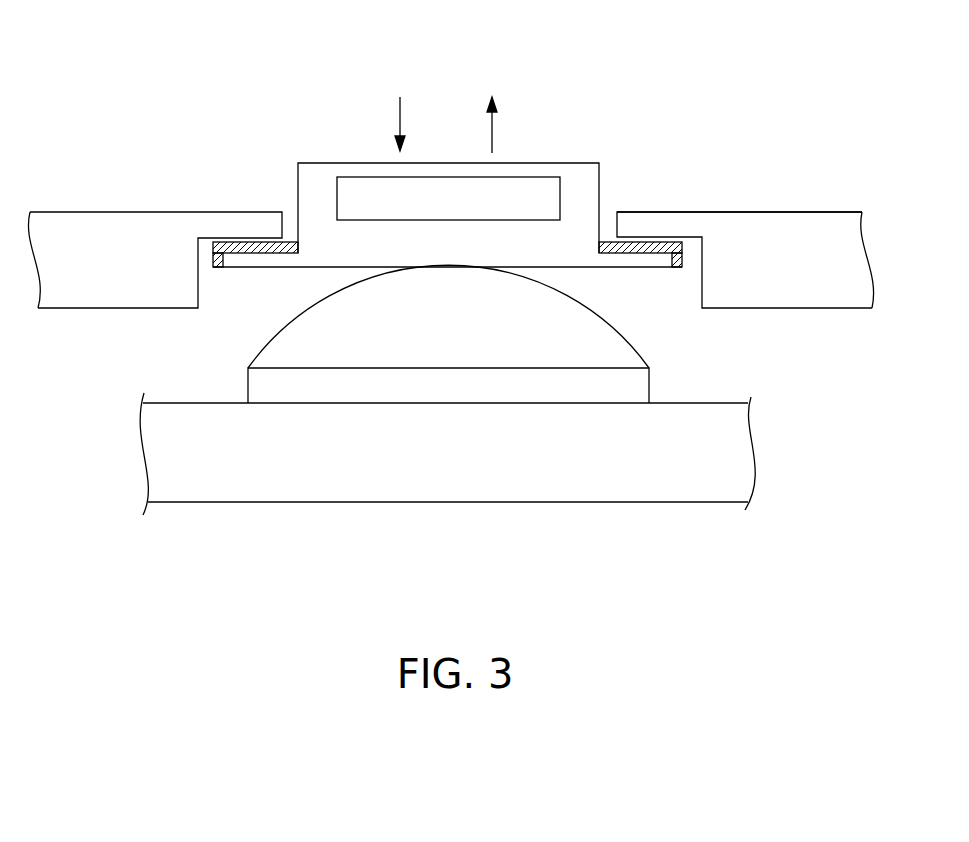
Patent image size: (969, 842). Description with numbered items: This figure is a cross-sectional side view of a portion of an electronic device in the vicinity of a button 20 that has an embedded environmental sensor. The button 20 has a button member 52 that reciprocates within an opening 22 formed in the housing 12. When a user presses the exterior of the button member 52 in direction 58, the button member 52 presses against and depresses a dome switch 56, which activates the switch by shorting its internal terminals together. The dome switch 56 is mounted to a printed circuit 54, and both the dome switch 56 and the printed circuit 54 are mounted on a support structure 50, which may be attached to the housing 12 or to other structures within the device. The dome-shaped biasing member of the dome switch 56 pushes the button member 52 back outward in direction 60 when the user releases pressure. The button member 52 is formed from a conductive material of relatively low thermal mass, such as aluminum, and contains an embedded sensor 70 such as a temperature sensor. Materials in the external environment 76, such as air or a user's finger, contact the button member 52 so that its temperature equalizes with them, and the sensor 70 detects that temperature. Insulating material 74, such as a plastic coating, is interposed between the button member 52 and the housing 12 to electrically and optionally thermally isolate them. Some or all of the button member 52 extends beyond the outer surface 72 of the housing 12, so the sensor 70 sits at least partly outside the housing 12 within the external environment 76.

The housing 12 is at (100, 230).
The button 20 is at (530, 51).
The opening 22 is at (287, 191).
The support structure 50 is at (375, 483).
The button member 52 is at (318, 163).
The printed circuit 54 is at (543, 392).
The dome switch 56 is at (598, 332).
The direction 58 is at (402, 125).
The direction 60 is at (493, 127).
The sensor 70 is at (538, 185).
The outer surface 72 is at (737, 212).
The insulating material 74 is at (238, 242).
The external environment 76 is at (420, 41).